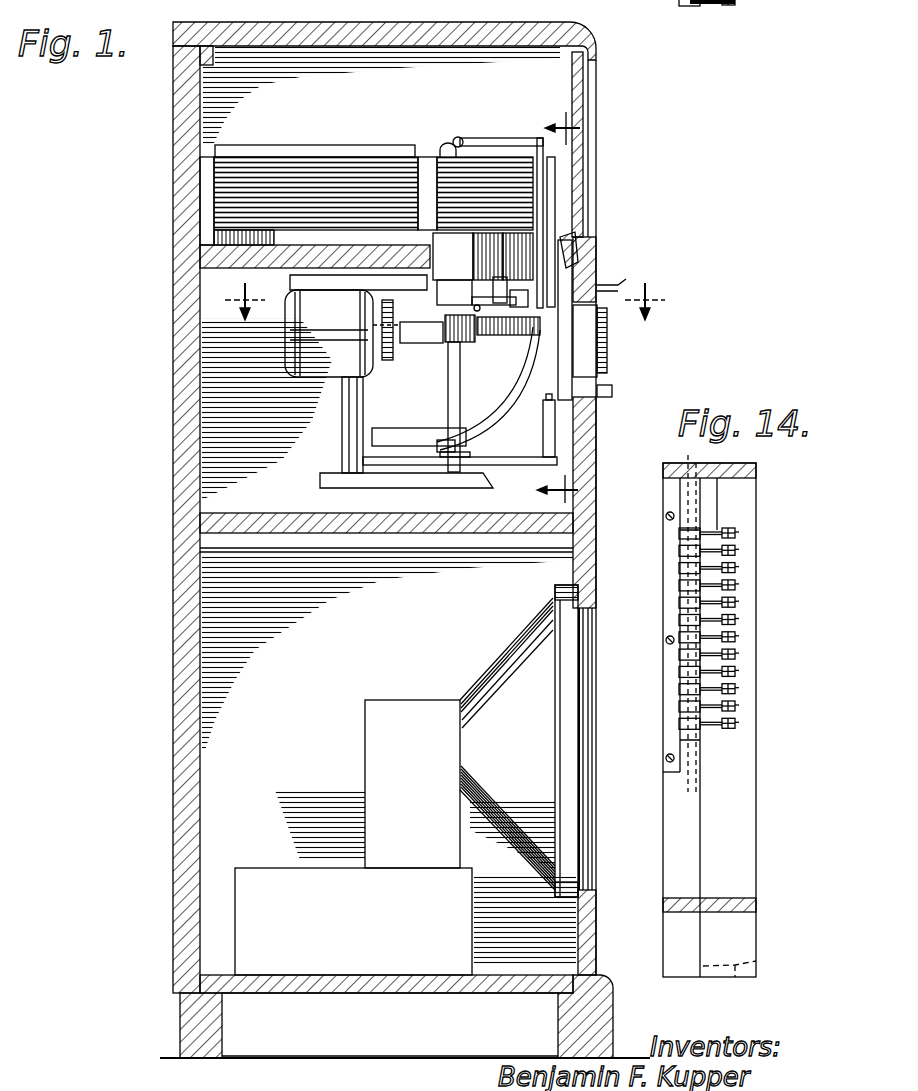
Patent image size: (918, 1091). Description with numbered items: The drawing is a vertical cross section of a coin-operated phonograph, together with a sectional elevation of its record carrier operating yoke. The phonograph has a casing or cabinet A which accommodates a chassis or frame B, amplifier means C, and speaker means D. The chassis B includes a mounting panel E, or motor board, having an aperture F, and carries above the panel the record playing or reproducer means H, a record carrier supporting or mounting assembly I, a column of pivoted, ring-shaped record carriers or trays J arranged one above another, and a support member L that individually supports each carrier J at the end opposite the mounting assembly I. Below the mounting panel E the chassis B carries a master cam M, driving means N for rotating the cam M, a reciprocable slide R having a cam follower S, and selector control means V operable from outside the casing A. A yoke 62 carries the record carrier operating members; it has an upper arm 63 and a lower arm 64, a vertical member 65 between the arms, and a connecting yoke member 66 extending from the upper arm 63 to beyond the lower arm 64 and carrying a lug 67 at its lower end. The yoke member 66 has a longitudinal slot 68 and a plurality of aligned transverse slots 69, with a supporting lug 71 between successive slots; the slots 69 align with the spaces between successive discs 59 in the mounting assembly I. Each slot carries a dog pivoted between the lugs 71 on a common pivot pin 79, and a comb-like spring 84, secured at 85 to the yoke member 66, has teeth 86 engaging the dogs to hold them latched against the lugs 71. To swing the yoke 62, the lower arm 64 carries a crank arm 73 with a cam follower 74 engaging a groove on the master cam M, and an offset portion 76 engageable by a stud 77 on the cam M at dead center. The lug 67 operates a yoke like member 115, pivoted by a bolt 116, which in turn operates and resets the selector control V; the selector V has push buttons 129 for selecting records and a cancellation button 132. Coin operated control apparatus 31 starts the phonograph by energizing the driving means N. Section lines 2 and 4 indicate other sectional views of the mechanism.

In FIG. 1, the casing or cabinet A is at (598, 432).
In FIG. 1, the chassis or frame B is at (300, 284).
In FIG. 1, the amplifier means C is at (300, 835).
In FIG. 1, the speaker means D is at (466, 692).
In FIG. 1, the mounting panel E is at (200, 257).
In FIG. 1, the aperture F is at (572, 245).
In FIG. 1, the record playing or reproducer means H is at (386, 157).
In FIG. 1, the record carrier supporting or mounting assembly I is at (436, 148).
In FIG. 1, the record carriers or trays J is at (318, 178).
In FIG. 1, the record carrier support member L is at (213, 155).
In FIG. 1, the master cam M is at (500, 432).
In FIG. 1, the driving means N is at (395, 345).
In FIG. 1, the reciprocable slide R is at (363, 410).
In FIG. 1, the cam follower S is at (372, 443).
In FIG. 1, the selector control means V is at (602, 352).
In FIG. 1, the section line 2 is at (546, 296).
In FIG. 1, the section line 4 is at (442, 301).
In FIG. 1, the coin operated control apparatus 31 is at (624, 282).
In FIG. 1, the discs 59 is at (458, 232).
In FIG. 1, the yoke 62 is at (545, 140).
In FIG. 14, the yoke 62 is at (760, 768).
In FIG. 1, the upper arm 63 is at (490, 138).
In FIG. 14, the upper arm 63 is at (757, 470).
In FIG. 1, the lower arm 64 is at (520, 288).
In FIG. 14, the lower arm 64 is at (757, 908).
In FIG. 1, the vertical member 65 is at (492, 282).
In FIG. 14, the connecting yoke member 66 is at (757, 716).
In FIG. 14, the lug 67 is at (757, 963).
In FIG. 1, the longitudinal slot 68 is at (484, 256).
In FIG. 14, the longitudinal slot 68 is at (718, 512).
In FIG. 14, the aligned slots 69 is at (679, 553).
In FIG. 14, the supporting lug 71 is at (679, 636).
In FIG. 1, the crank arm 73 is at (470, 300).
In FIG. 1, the cam follower 74 is at (440, 318).
In FIG. 1, the offset portion 76 is at (472, 343).
In FIG. 1, the stud 77 is at (512, 336).
In FIG. 14, the pivot pin or bolt 79 is at (680, 615).
In FIG. 14, the resilient means 84 is at (670, 502).
In FIG. 14, the spring securing means 85 is at (665, 518).
In FIG. 14, the teeth 86 is at (739, 585).
In FIG. 1, the yoke like member 115 is at (460, 376).
In FIG. 1, the bolt 116 is at (476, 448).
In FIG. 1, the push buttons 129 is at (608, 345).
In FIG. 1, the cancellation button 132 is at (613, 390).